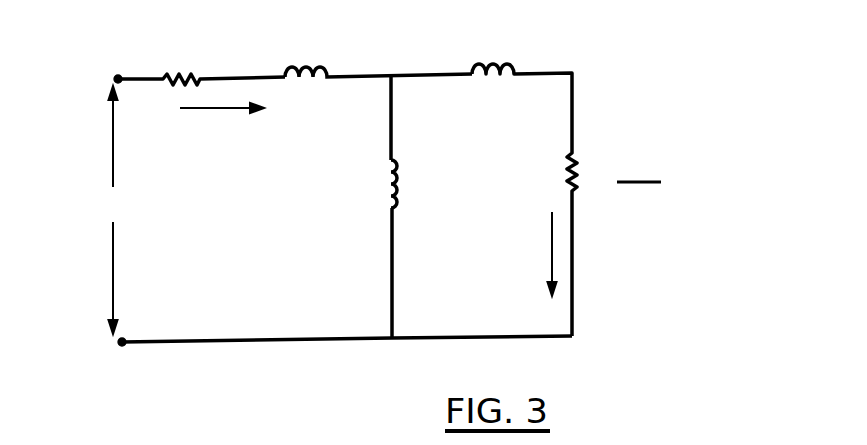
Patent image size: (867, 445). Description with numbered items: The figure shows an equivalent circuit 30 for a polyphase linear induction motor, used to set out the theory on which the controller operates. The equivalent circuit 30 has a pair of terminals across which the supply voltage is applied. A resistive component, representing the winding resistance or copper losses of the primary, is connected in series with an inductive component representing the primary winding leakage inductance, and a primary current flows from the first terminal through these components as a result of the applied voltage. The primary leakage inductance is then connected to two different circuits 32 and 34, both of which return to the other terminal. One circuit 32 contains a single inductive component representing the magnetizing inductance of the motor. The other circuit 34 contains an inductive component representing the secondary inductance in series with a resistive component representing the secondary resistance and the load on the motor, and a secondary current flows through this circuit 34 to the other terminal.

The equivalent circuit 30 is at (648, 98).
The circuit 32 is at (348, 199).
The circuit 34 is at (570, 49).